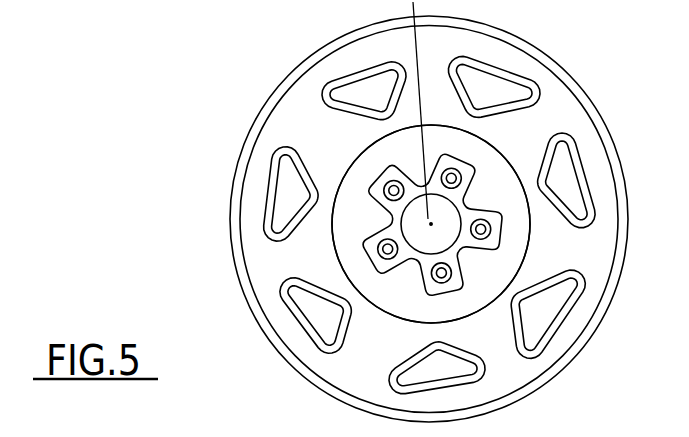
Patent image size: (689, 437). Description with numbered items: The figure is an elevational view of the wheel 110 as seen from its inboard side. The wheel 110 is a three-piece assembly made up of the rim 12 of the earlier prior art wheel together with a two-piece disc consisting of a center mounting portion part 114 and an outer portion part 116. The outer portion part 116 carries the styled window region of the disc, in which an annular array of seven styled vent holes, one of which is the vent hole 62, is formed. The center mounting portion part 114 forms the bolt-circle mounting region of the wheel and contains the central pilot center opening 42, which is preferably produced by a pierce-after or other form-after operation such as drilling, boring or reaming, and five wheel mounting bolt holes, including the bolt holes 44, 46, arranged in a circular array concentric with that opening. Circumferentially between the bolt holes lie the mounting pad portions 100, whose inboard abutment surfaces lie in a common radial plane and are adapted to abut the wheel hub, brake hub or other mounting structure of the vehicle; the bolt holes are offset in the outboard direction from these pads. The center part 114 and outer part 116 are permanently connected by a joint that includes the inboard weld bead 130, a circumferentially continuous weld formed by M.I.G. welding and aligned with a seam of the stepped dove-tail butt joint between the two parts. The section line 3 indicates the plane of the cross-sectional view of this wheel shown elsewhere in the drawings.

The section line 3- 3 is at (412, 10).
The rim 12 is at (628, 156).
The wheel 110 is at (577, 75).
The center mounting portion part 114 is at (338, 226).
The outer portion part 116 is at (440, 66).
The inboard weld bead 130 is at (362, 154).
The styled vent hole 62 is at (497, 108).
The wheel mounting bolt hole 44 is at (450, 176).
The wheel mounting bolt hole 46 is at (481, 228).
The pilot center opening 42 is at (417, 262).
The mounting pad portion 100 is at (478, 245).